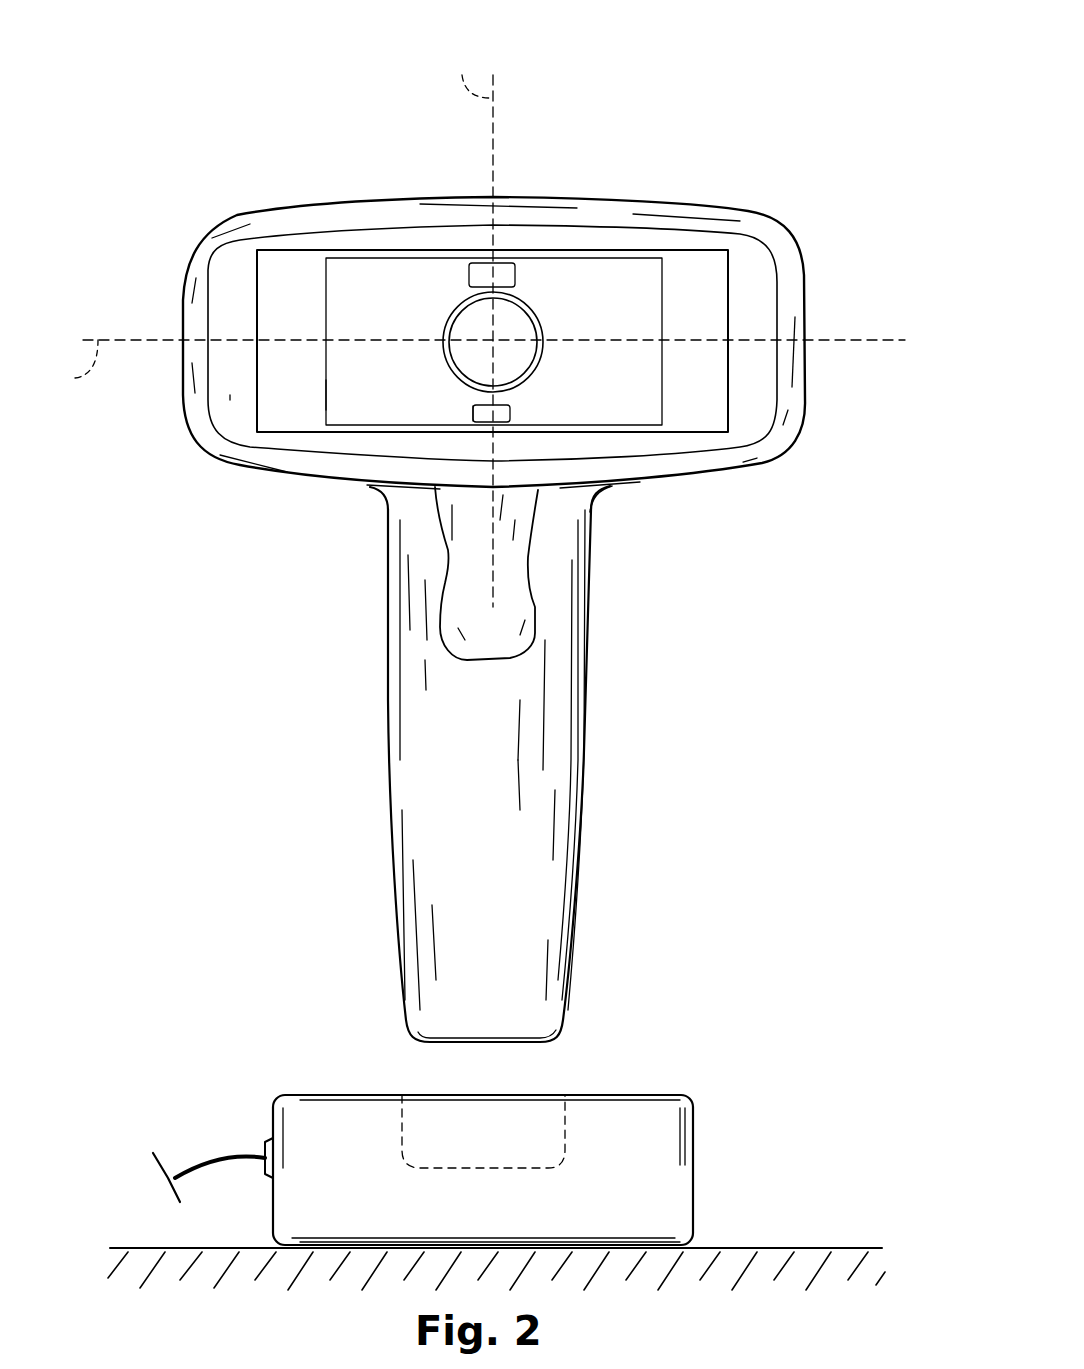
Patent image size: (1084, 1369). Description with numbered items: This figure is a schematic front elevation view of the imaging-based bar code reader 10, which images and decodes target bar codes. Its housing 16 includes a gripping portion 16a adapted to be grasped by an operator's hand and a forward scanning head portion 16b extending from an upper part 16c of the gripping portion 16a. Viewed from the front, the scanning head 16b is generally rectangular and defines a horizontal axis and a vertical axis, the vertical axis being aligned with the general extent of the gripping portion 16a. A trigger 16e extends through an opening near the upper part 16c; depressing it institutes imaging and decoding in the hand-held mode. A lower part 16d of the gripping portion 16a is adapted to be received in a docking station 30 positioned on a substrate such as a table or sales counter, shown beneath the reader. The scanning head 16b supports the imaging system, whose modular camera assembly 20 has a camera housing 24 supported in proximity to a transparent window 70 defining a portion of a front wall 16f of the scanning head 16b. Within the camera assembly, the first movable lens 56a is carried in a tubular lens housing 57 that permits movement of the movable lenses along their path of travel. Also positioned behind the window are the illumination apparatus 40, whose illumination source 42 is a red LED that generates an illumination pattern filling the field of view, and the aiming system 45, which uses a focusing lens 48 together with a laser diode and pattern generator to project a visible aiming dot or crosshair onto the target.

The imaging-based bar code reader 10 is at (196, 80).
The housing 16 is at (352, 684).
The gripping portion 16a is at (606, 750).
The scanning head portion 16b is at (823, 404).
The upper part of the gripping portion 16c is at (598, 498).
The lower part of the gripping portion 16d is at (562, 1012).
The trigger 16e is at (482, 602).
The front wall of the scanning head 16f is at (228, 397).
The camera assembly 20 is at (608, 238).
The camera housing 24 is at (677, 319).
The docking station 30 is at (694, 1158).
The illumination apparatus 40 is at (551, 272).
The illumination source 42 is at (503, 262).
The aiming system 45 is at (529, 413).
The focusing lens 48 is at (470, 413).
The first movable lens 56a is at (503, 350).
The tubular lens housing 57 is at (450, 367).
The transparent window 70 is at (298, 393).